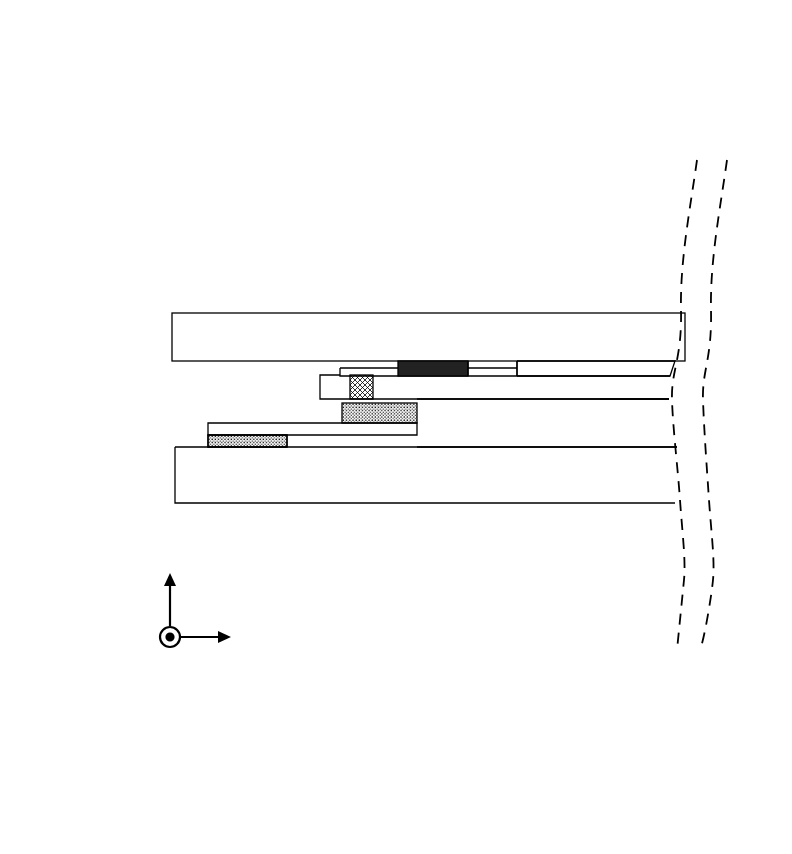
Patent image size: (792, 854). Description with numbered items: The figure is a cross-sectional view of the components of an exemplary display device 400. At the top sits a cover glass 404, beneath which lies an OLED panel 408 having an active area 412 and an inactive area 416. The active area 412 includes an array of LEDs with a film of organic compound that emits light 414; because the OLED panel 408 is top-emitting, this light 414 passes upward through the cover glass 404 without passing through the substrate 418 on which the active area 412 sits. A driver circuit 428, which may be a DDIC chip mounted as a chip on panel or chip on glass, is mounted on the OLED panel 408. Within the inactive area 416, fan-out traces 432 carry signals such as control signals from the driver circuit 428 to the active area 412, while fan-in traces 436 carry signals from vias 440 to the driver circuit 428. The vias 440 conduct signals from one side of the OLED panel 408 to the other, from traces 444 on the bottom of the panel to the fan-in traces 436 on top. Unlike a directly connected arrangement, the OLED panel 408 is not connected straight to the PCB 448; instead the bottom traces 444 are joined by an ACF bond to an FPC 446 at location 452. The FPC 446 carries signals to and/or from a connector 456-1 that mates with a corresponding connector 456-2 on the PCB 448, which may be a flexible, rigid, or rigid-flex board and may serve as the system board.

The display device 400 is at (149, 104).
The cover glass 404 is at (217, 313).
The OLED panel 408 is at (524, 413).
The active area 412 is at (585, 371).
The light 414 is at (618, 360).
The inactive area 416 is at (433, 388).
The substrate 418 is at (625, 388).
The driver circuit 428 is at (432, 368).
The fan-out traces 432 is at (485, 371).
The fan-in traces 436 is at (392, 372).
The vias 440 is at (360, 388).
The traces 444 is at (322, 400).
The FPC 446 is at (308, 428).
The PCB 448 is at (367, 503).
The location 452 is at (342, 412).
The connector 456-1 is at (208, 440).
The connector 456-2 is at (194, 449).